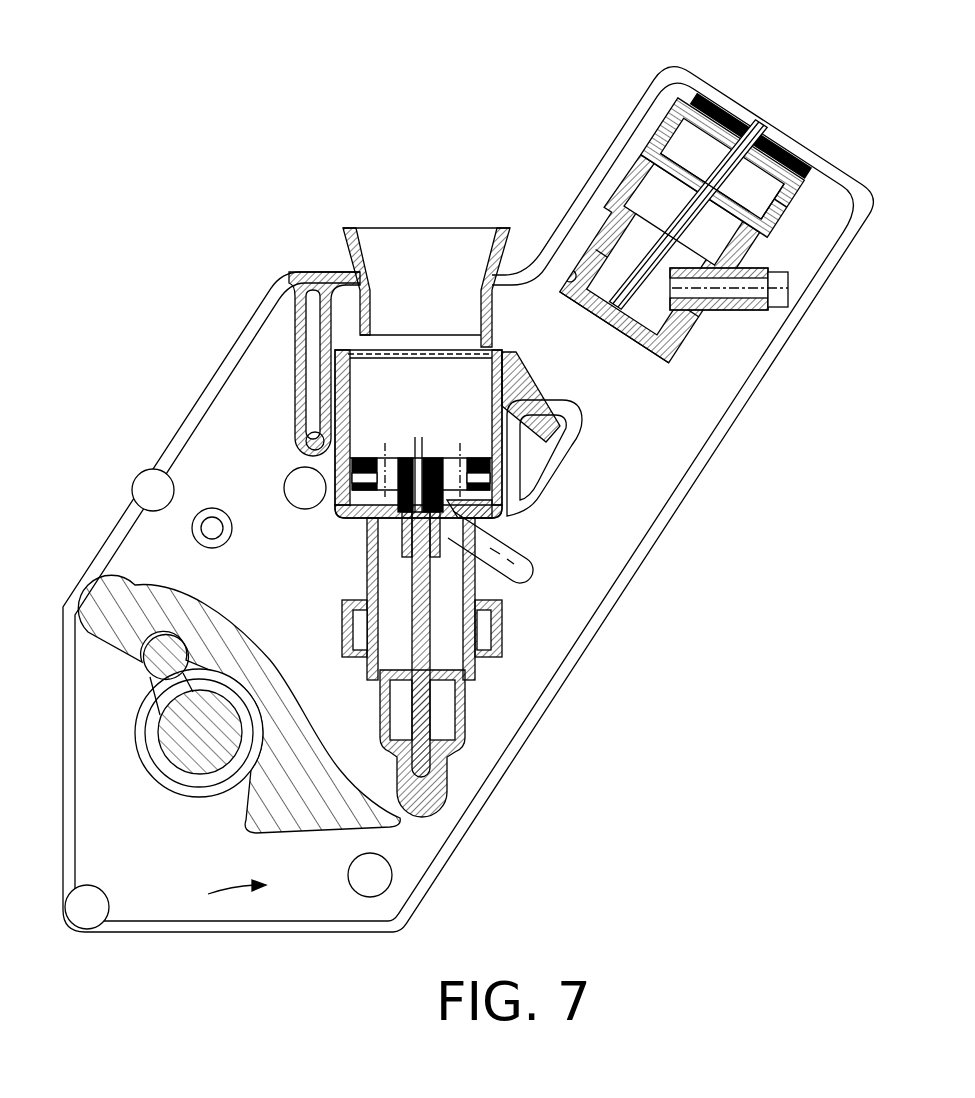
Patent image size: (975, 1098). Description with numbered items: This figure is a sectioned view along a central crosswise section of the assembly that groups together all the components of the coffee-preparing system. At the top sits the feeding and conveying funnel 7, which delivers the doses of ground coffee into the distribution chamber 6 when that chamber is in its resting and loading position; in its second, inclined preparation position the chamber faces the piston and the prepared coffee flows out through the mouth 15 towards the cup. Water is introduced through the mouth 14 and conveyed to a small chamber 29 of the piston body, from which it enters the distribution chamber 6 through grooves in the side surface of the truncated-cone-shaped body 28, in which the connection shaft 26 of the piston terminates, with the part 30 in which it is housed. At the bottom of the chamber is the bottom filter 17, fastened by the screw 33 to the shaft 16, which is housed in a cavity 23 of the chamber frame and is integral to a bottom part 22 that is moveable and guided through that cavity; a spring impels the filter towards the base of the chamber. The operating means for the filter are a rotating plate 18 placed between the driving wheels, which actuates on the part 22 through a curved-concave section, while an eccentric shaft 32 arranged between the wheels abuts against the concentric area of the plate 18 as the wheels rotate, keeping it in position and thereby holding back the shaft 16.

The feeding and conveying funnel 7 is at (447, 228).
The distribution chamber 6 is at (382, 387).
The bottom filter 17 is at (417, 458).
The screw 33 is at (447, 500).
The mouth 15 is at (530, 563).
The shaft 16 is at (430, 620).
The bottom part 22 is at (465, 748).
The cavity 23 is at (428, 622).
The plate 18 is at (360, 816).
The eccentric shaft 32 is at (165, 652).
The connection shaft 26 is at (658, 163).
The small chamber 29 is at (613, 230).
The part 30 is at (787, 210).
The truncated-cone-shaped body 28 is at (667, 360).
The mouth 14 is at (778, 297).